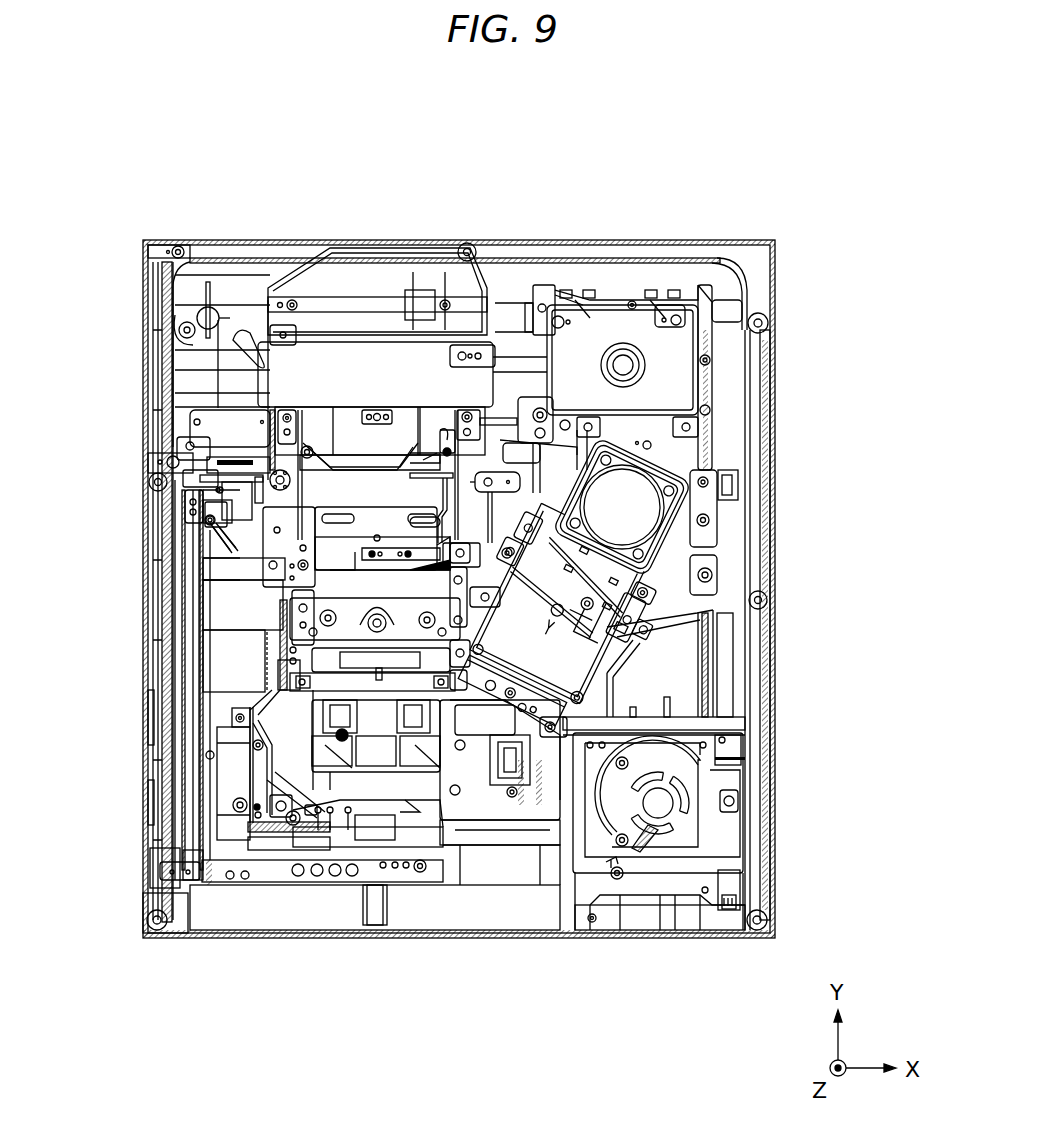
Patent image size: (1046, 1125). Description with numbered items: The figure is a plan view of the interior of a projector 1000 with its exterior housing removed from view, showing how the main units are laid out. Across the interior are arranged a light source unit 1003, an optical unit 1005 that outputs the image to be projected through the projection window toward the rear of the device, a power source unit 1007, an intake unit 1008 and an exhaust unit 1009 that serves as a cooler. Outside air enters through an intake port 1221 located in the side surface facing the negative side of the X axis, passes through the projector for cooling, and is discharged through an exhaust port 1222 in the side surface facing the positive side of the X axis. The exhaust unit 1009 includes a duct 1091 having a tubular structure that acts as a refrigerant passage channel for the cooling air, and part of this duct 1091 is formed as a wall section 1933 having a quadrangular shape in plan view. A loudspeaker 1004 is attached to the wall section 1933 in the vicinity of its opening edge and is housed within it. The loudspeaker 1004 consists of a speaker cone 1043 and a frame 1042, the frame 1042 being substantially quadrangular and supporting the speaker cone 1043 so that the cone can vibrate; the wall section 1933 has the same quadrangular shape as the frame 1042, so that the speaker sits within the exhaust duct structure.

The projector 1000 is at (826, 135).
The optical unit 1005 is at (370, 302).
The wall section 1933 is at (665, 468).
The loudspeaker 1004 is at (877, 494).
The speaker cone 1043 is at (640, 507).
The frame 1042 is at (650, 545).
The duct 1091 is at (617, 593).
The exhaust unit 1009 is at (675, 658).
The exhaust port 1222 is at (773, 703).
The light source unit 1003 is at (703, 835).
The intake unit 1008 is at (217, 675).
The intake port 1221 is at (142, 717).
The power source unit 1007 is at (257, 862).